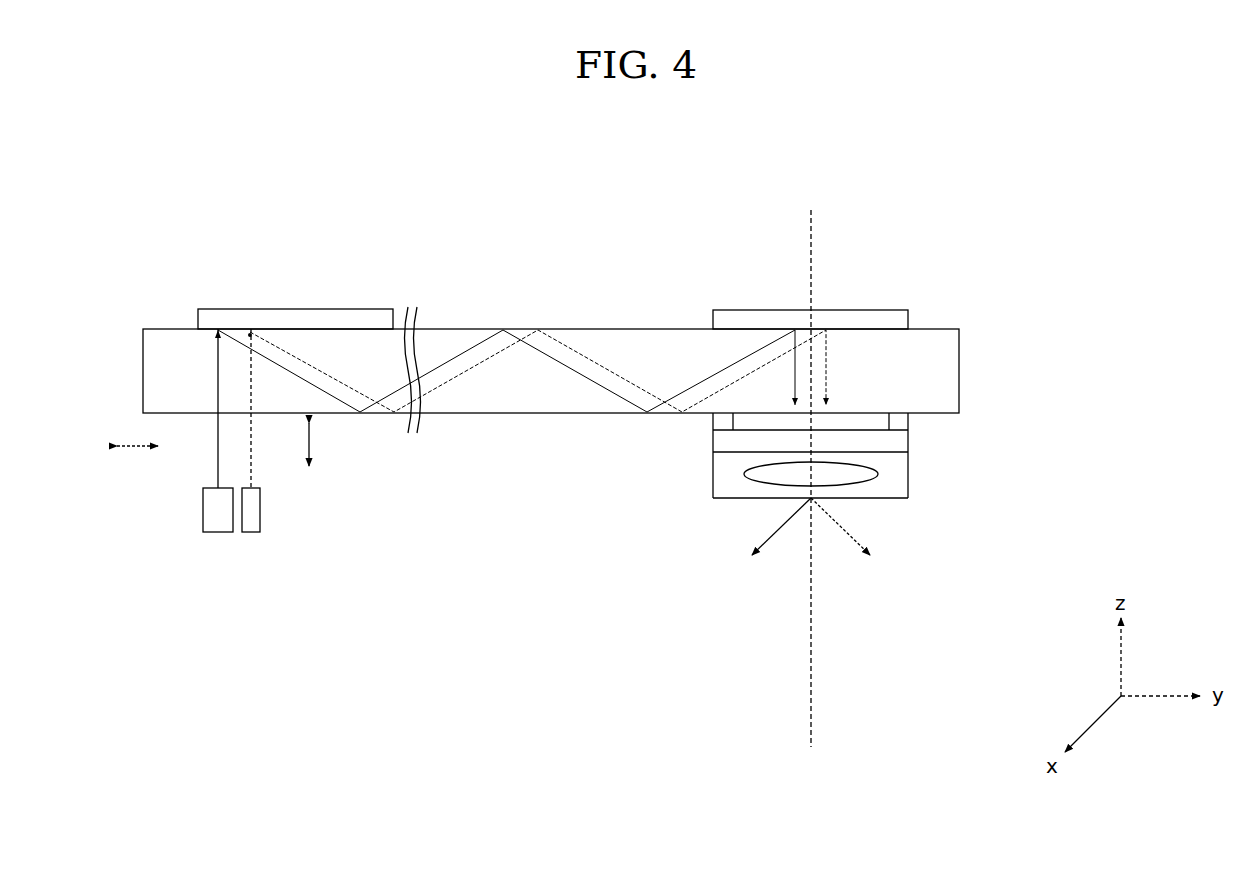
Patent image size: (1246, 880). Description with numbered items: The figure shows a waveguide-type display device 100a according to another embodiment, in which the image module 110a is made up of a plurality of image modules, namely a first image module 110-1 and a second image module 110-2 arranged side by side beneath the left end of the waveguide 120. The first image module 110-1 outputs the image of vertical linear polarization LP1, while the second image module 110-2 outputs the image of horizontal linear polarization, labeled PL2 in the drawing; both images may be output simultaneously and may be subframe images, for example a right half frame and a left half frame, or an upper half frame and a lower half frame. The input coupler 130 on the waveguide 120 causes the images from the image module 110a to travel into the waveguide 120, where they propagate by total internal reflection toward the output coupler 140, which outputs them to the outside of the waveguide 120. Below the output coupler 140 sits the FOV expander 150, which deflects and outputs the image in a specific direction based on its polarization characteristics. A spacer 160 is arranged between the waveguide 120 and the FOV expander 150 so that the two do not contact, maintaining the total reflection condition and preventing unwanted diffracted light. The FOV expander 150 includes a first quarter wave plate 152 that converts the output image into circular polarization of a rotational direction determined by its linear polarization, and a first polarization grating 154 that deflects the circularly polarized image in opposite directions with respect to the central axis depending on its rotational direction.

The waveguide-type display device 100a is at (982, 305).
The image module 110a is at (302, 594).
The first image module 110-1 is at (253, 532).
The second image module 110-2 is at (210, 532).
The waveguide 120 is at (960, 370).
The input coupler 130 is at (302, 309).
The output coupler 140 is at (857, 309).
The FOV expander 150 is at (1008, 470).
The first ¼ wave plate 152 is at (908, 448).
The first polarization grating 154 is at (908, 482).
The spacer 160 is at (908, 418).
The second light path PL2 is at (161, 447).
The image of vertical linear polarization LP1 is at (286, 444).